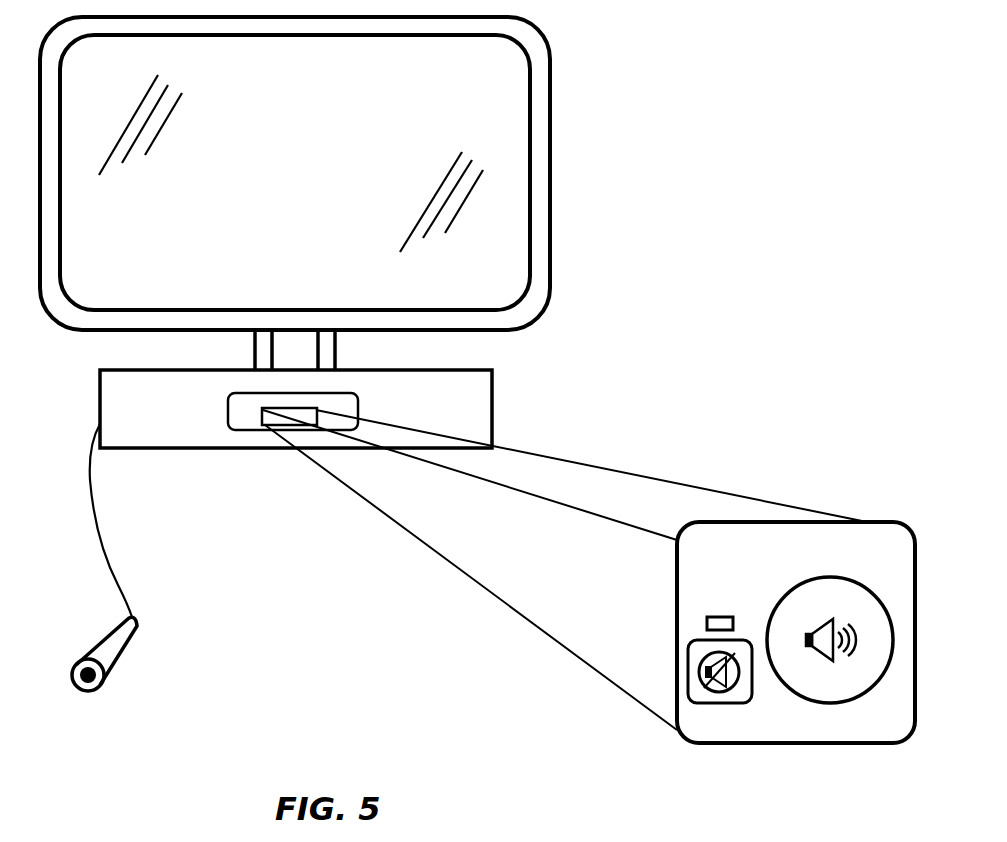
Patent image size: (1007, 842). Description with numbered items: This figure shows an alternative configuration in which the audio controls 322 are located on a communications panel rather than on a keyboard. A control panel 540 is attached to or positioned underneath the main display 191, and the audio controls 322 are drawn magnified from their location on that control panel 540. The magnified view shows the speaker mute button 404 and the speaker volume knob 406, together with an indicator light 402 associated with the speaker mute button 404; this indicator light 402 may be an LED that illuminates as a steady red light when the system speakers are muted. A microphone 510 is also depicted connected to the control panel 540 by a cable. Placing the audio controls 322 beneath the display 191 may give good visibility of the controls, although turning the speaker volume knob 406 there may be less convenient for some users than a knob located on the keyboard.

The main display 191 is at (552, 175).
The control panel 540 is at (495, 417).
The microphone 510 is at (107, 652).
The audio controls 322 is at (735, 750).
The indicator light 402 is at (707, 613).
The speaker mute button 404 is at (688, 672).
The speaker volume knob 406 is at (863, 693).